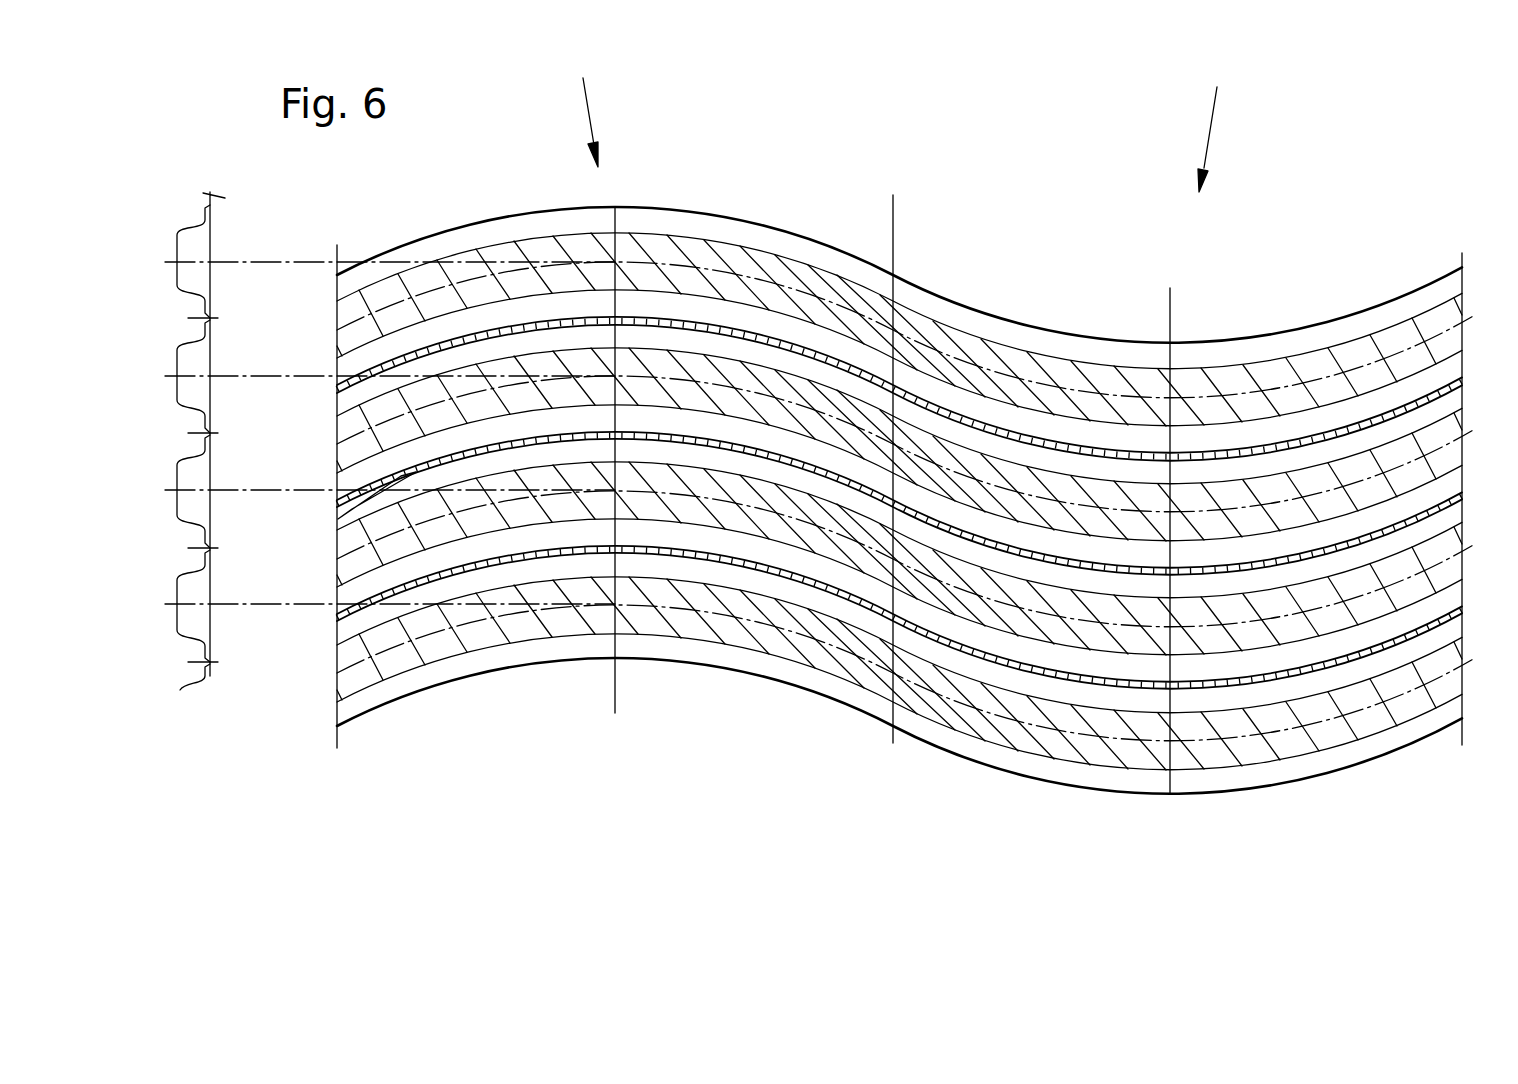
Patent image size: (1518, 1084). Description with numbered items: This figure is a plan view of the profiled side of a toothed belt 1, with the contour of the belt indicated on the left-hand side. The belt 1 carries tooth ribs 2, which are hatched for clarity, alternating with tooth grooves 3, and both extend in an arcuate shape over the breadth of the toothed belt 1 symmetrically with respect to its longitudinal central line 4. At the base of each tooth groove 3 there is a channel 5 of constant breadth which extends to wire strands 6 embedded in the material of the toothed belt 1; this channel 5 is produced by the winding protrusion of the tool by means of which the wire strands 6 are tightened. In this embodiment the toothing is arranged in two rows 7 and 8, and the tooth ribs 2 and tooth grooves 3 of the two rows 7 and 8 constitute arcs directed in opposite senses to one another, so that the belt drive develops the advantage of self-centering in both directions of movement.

The toothed belt 1 is at (818, 521).
The tooth ribs 2 is at (212, 662).
The tooth grooves 3 is at (778, 320).
The longitudinal central line 4 is at (893, 743).
The channel 5 is at (212, 433).
The wire strands 6 is at (212, 548).
The row 7 is at (586, 105).
The row 8 is at (1212, 118).